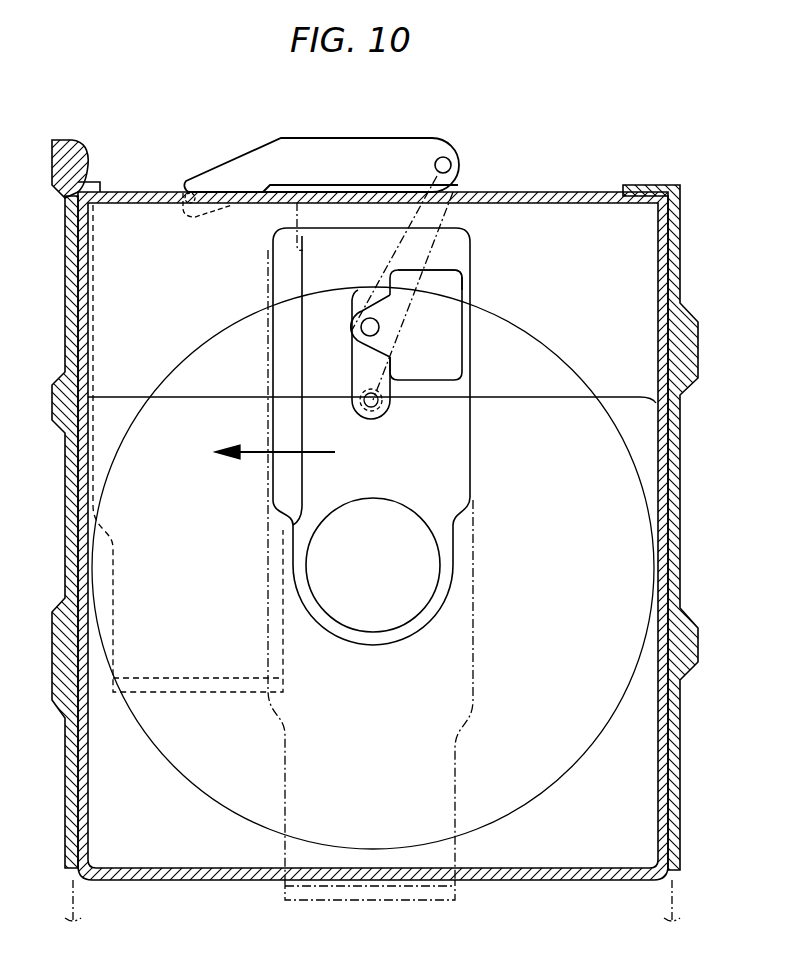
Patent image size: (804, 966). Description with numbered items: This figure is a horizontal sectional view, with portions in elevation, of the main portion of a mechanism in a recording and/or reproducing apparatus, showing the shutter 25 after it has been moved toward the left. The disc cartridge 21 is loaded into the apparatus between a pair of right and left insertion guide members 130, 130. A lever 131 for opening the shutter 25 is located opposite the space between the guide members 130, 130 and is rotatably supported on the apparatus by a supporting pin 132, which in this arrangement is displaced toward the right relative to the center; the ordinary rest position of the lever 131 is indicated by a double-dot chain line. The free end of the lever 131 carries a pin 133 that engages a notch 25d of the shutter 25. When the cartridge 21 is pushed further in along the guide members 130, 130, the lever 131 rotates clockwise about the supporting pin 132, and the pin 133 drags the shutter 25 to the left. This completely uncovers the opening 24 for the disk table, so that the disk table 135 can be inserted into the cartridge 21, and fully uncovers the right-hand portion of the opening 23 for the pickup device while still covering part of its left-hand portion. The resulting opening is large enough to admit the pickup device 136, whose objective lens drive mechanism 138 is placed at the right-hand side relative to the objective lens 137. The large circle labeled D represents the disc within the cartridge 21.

The insertion guide member 130 is at (72, 508).
The lever 131 is at (257, 160).
The supporting pin 132 is at (445, 156).
The pin 133 is at (200, 207).
The notch 25d is at (197, 198).
The objective lens 137 is at (358, 328).
The pickup device 136 is at (520, 357).
The objective lens drive mechanism 138 is at (453, 283).
The disc cartridge 21 is at (630, 394).
The opening for the pickup device 23 is at (472, 408).
The disk table 135 is at (383, 634).
The opening for the disk table 24 is at (328, 623).
The shutter 25 is at (203, 670).
The disc D is at (594, 745).